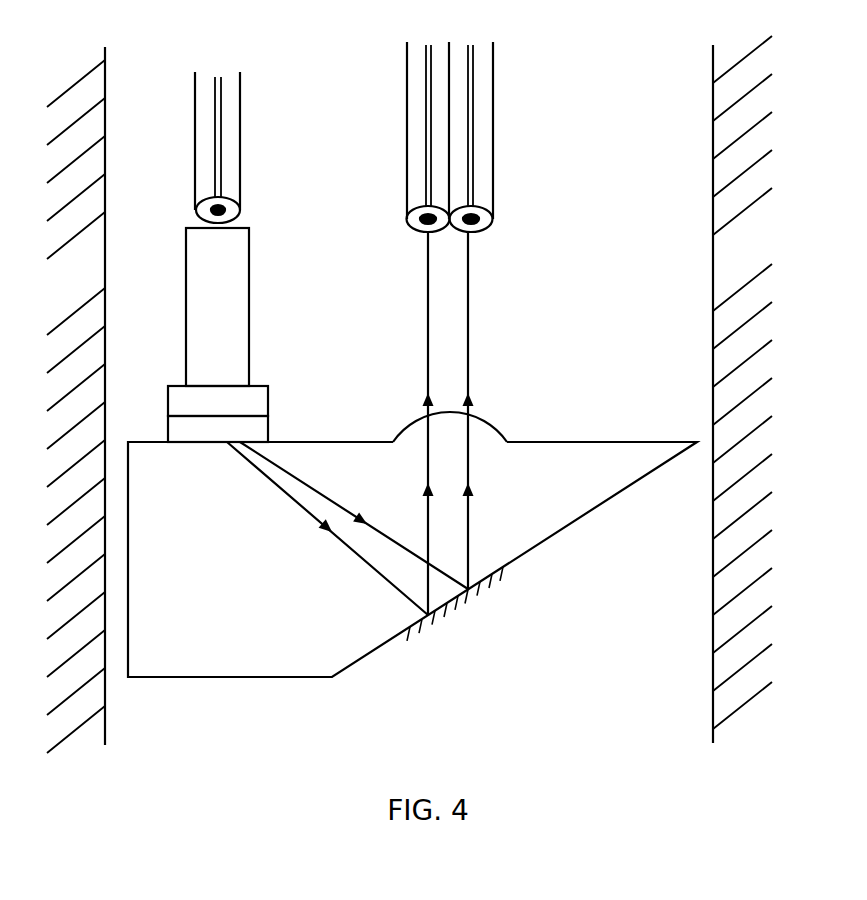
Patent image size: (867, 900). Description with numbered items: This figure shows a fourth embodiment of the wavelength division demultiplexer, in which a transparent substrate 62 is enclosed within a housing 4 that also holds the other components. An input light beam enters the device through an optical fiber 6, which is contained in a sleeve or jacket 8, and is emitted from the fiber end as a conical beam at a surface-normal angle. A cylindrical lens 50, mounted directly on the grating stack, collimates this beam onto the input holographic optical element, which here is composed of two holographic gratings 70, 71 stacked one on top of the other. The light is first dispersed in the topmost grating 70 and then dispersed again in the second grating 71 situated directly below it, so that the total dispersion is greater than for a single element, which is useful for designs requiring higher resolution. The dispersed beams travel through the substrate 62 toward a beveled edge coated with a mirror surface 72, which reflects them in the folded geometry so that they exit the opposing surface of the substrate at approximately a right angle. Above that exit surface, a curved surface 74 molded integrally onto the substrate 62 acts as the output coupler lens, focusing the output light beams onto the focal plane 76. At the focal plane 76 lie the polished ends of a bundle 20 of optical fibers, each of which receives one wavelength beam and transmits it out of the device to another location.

The housing 4 is at (409, 394).
The optical fiber 6 is at (227, 122).
The sleeve or jacket 8 is at (200, 210).
The bundle of optical fibers 20 is at (482, 77).
The cylindrical lens 50 is at (227, 305).
The topmost grating 70 is at (239, 400).
The second grating 71 is at (239, 428).
The substrate 62 is at (412, 539).
The mirror surface 72 is at (552, 544).
The curved surface 74 is at (467, 422).
The focal plane 76 is at (578, 219).